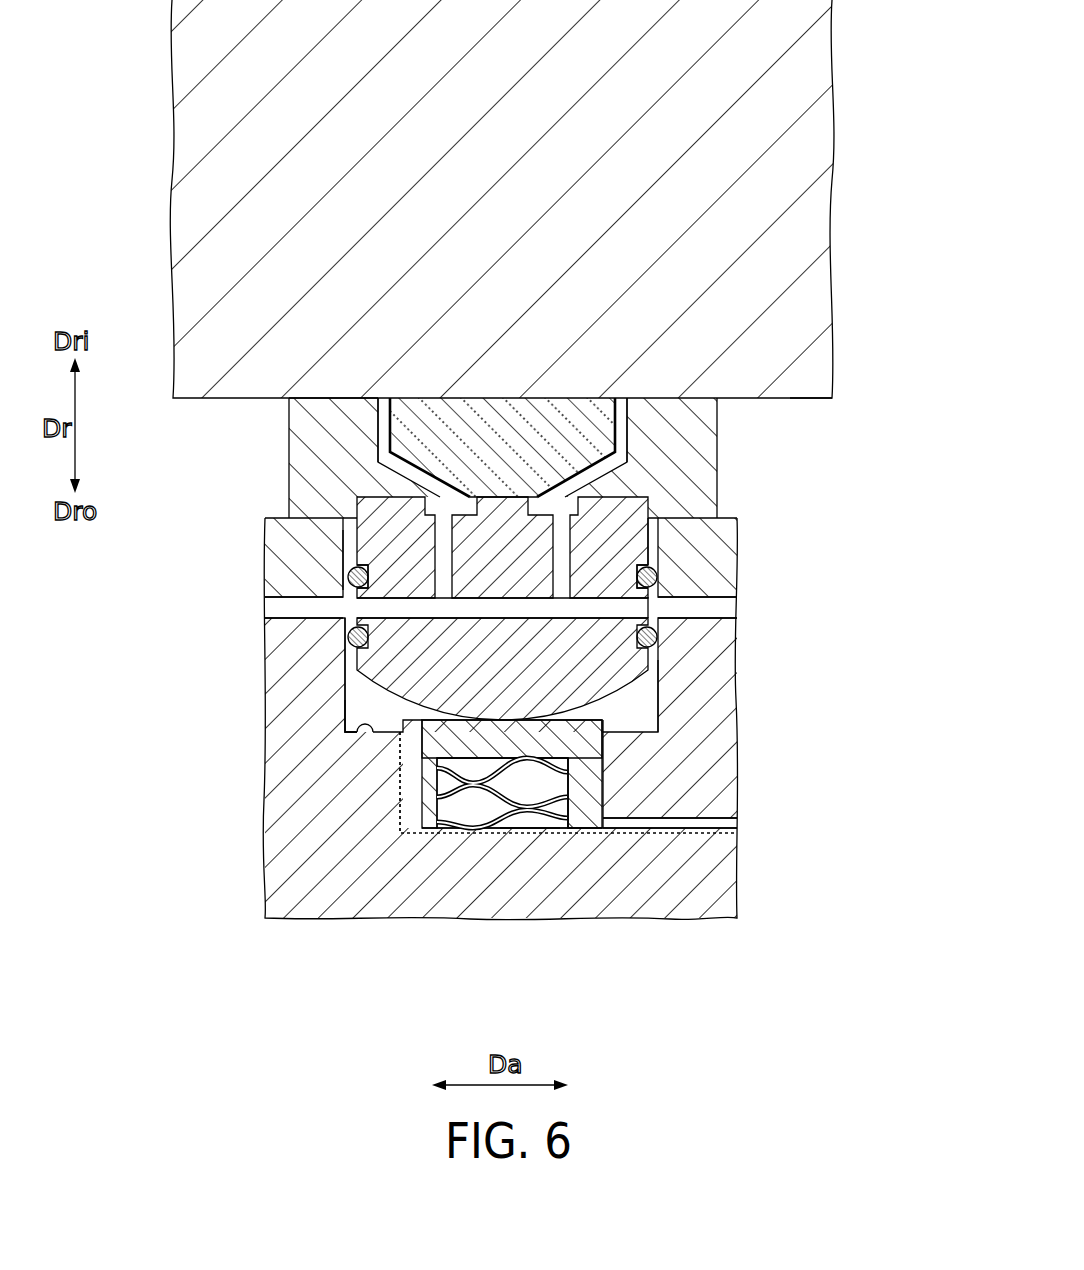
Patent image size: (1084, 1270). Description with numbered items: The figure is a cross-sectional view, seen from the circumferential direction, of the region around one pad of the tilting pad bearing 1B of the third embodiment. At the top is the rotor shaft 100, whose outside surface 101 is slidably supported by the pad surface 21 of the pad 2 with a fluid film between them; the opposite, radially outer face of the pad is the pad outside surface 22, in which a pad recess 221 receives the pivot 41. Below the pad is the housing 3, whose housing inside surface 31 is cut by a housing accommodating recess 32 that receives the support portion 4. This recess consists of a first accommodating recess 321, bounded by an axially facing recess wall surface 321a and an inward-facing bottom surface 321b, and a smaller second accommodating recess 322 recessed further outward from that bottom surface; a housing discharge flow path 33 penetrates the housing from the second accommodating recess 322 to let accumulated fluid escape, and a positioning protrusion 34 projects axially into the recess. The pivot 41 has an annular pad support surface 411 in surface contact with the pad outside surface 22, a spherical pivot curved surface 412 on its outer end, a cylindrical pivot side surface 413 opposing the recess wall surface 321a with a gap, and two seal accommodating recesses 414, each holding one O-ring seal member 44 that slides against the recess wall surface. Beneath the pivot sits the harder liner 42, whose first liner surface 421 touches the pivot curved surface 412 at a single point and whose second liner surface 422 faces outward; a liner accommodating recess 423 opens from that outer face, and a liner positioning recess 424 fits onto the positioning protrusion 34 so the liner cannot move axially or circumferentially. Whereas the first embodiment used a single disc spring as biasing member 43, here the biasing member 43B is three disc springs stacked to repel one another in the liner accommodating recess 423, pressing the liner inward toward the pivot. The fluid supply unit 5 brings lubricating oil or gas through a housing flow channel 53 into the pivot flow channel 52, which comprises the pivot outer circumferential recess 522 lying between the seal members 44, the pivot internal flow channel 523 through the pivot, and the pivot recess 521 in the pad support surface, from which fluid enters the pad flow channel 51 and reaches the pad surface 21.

The rotor shaft 100 is at (232, 101).
The outside surface of the rotor shaft 101 is at (802, 400).
The pad 2 is at (317, 458).
The pad surface 21 is at (285, 399).
The pad outside surface 22 is at (290, 525).
The pad recess 221 is at (350, 545).
The housing 3 is at (282, 844).
The housing inside surface 31 is at (725, 518).
The housing accommodating recess 32 is at (511, 831).
The first accommodating recess 321 is at (352, 710).
The recess wall surface 321a is at (650, 698).
The bottom surface 321b is at (356, 735).
The second accommodating recess 322 is at (543, 826).
The housing discharge flow path 33 is at (700, 823).
The positioning protrusion 34 is at (362, 716).
The support portion 4 is at (517, 584).
The pivot 41 is at (503, 543).
The pad support surface 411 is at (615, 508).
The pivot curved surface 412 is at (645, 718).
The pivot side surface 413 is at (357, 560).
The seal accommodating recess 414 is at (348, 577).
The liner 42 is at (607, 790).
The first liner surface 421 is at (585, 749).
The second liner surface 422 is at (582, 830).
The liner accommodating recess 423 is at (470, 760).
The liner positioning recess 424 is at (404, 745).
The biasing member 43 is at (500, 778).
The biasing member 43B is at (529, 824).
The seal member 44 is at (657, 572).
The fluid supply unit 5 is at (250, 602).
The pad flow channel 51 is at (383, 406).
The pivot flow channel 52 is at (675, 456).
The pivot recess 521 is at (540, 496).
The pivot outer circumferential recess 522 is at (660, 607).
The pivot internal flow channel 523 is at (648, 545).
The housing flow channel 53 is at (292, 608).
The tilting pad bearing 1B is at (778, 958).